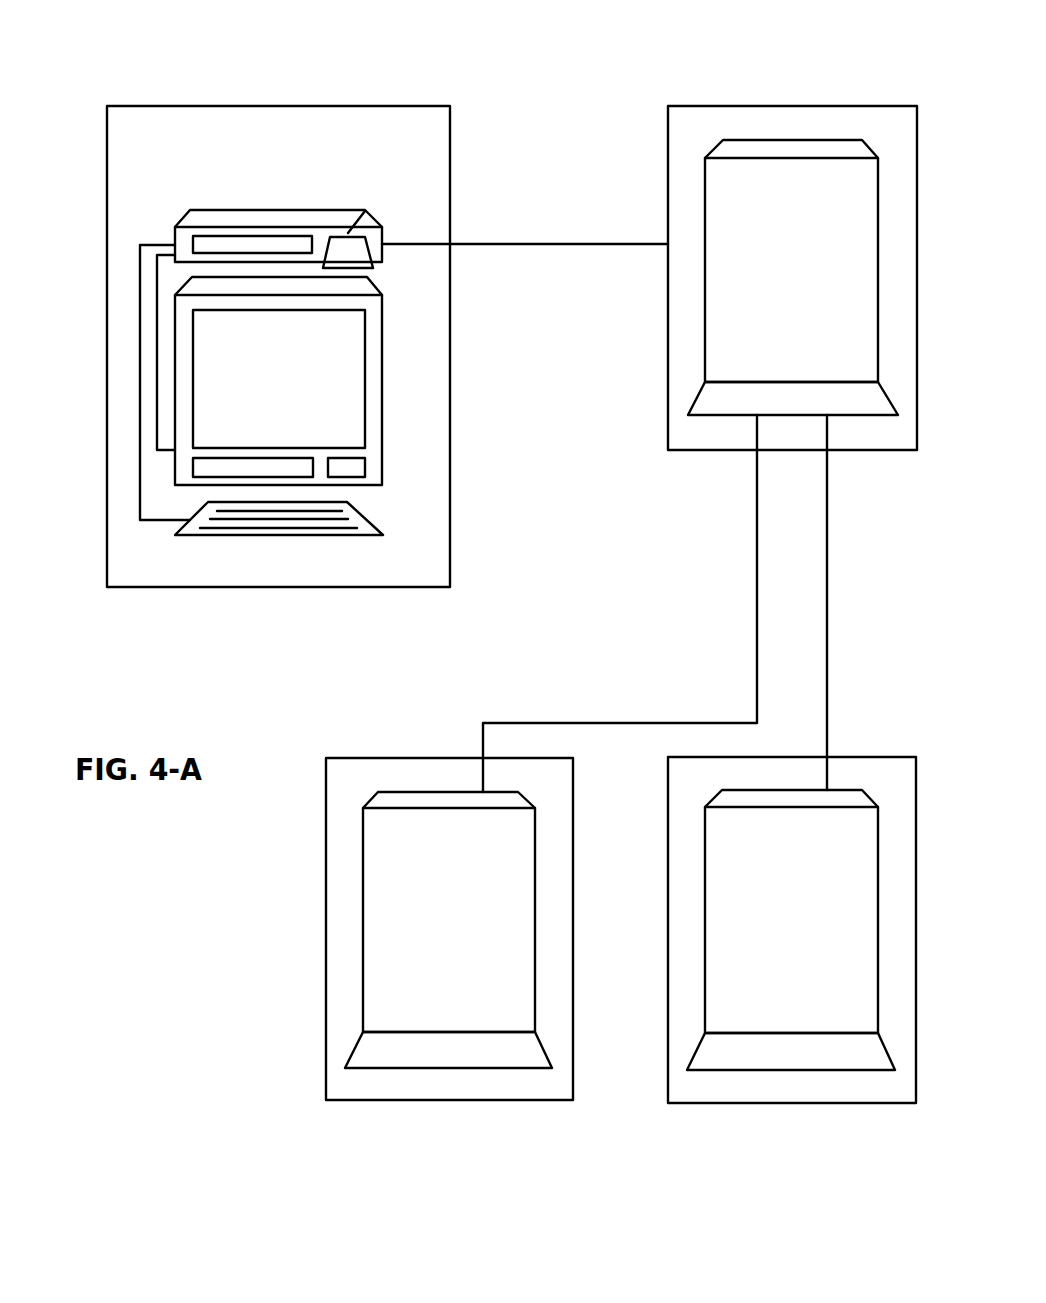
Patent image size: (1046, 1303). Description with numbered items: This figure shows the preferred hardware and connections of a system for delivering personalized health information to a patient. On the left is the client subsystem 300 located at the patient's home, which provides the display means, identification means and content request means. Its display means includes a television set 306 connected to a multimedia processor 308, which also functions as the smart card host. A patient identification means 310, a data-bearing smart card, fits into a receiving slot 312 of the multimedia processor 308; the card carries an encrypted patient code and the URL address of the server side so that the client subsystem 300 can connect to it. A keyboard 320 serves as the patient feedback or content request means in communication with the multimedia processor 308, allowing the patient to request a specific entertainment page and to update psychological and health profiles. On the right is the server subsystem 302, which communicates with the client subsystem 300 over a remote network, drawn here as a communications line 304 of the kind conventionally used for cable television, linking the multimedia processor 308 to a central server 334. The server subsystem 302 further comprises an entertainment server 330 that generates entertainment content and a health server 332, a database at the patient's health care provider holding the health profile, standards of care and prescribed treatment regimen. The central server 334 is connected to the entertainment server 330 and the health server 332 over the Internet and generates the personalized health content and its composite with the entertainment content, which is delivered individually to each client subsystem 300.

The client subsystem 300 is at (524, 575).
The server subsystem 302 is at (676, 551).
The communications line 304 is at (603, 246).
The television set 306 is at (382, 413).
The multimedia processor 308 is at (188, 211).
The patient identification means 310 is at (373, 268).
The receiving slot 312 is at (365, 211).
The keyboard 320 is at (368, 517).
The entertainment server 330 is at (448, 791).
The health server 332 is at (843, 790).
The central server 334 is at (705, 159).